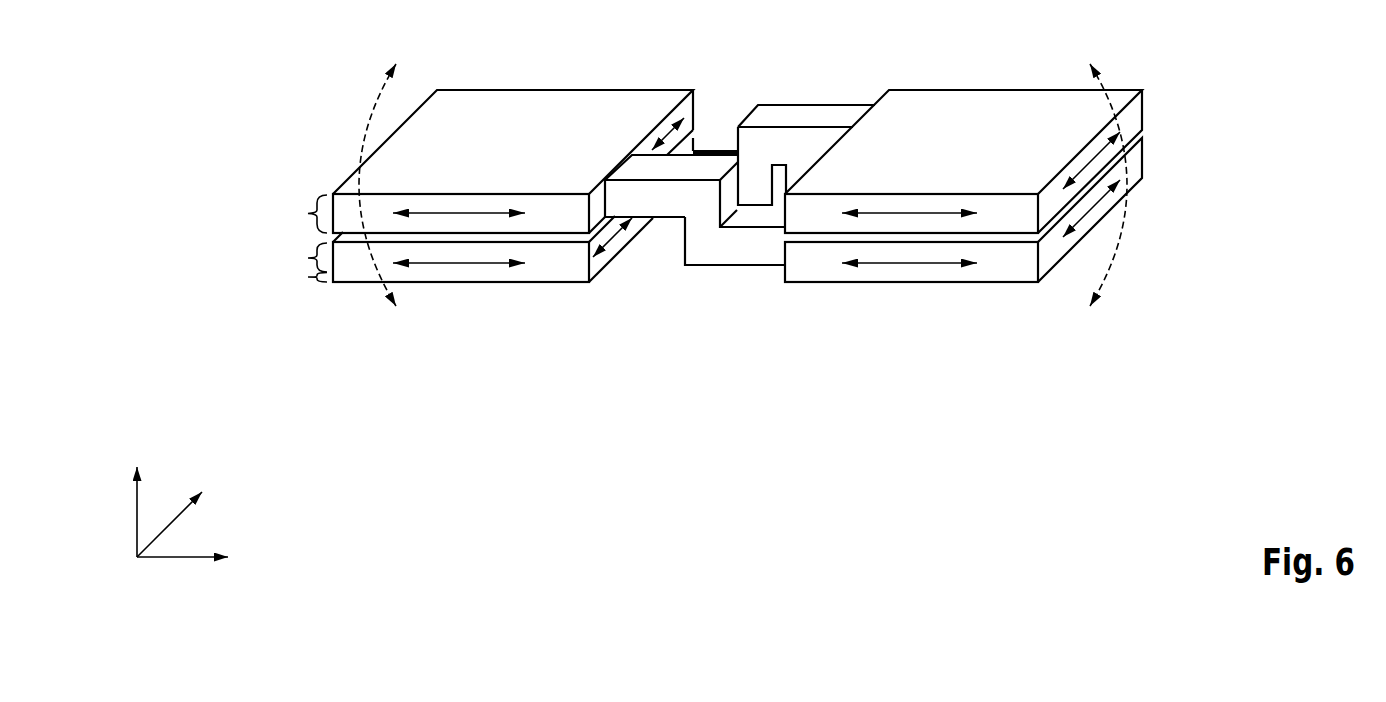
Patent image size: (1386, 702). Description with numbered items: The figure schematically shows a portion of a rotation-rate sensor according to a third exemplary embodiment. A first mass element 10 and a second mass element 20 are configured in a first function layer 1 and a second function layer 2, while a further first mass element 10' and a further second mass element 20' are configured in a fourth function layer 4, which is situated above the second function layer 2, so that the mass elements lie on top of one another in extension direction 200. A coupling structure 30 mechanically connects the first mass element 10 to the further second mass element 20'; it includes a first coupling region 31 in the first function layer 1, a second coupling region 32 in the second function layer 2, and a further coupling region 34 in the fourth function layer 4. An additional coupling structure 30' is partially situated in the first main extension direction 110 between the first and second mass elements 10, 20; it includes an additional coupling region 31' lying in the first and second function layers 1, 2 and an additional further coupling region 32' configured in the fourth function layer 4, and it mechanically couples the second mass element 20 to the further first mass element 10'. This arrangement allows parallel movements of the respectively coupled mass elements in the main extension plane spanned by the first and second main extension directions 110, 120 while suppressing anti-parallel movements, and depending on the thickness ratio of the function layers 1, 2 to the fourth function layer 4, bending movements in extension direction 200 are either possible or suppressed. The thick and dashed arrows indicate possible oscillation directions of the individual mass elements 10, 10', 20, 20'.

The first function layer 1 is at (310, 279).
The second function layer 2 is at (308, 256).
The fourth function layer 4 is at (308, 214).
The first mass element 10 is at (513, 241).
The further first mass element 10' is at (513, 130).
The second mass element 20 is at (963, 242).
The further second mass element 20' is at (963, 130).
The coupling structure 30 is at (795, 97).
The first coupling region 31 is at (726, 127).
The second coupling region 32 is at (774, 127).
The further coupling region 34 is at (820, 143).
The additional coupling structure 30' is at (712, 251).
The additional coupling region 31' is at (760, 283).
The additional further coupling region 32' is at (671, 215).
The first main extension direction 110 is at (275, 571).
The second main extension direction 120 is at (225, 488).
The extension direction 200 is at (158, 462).